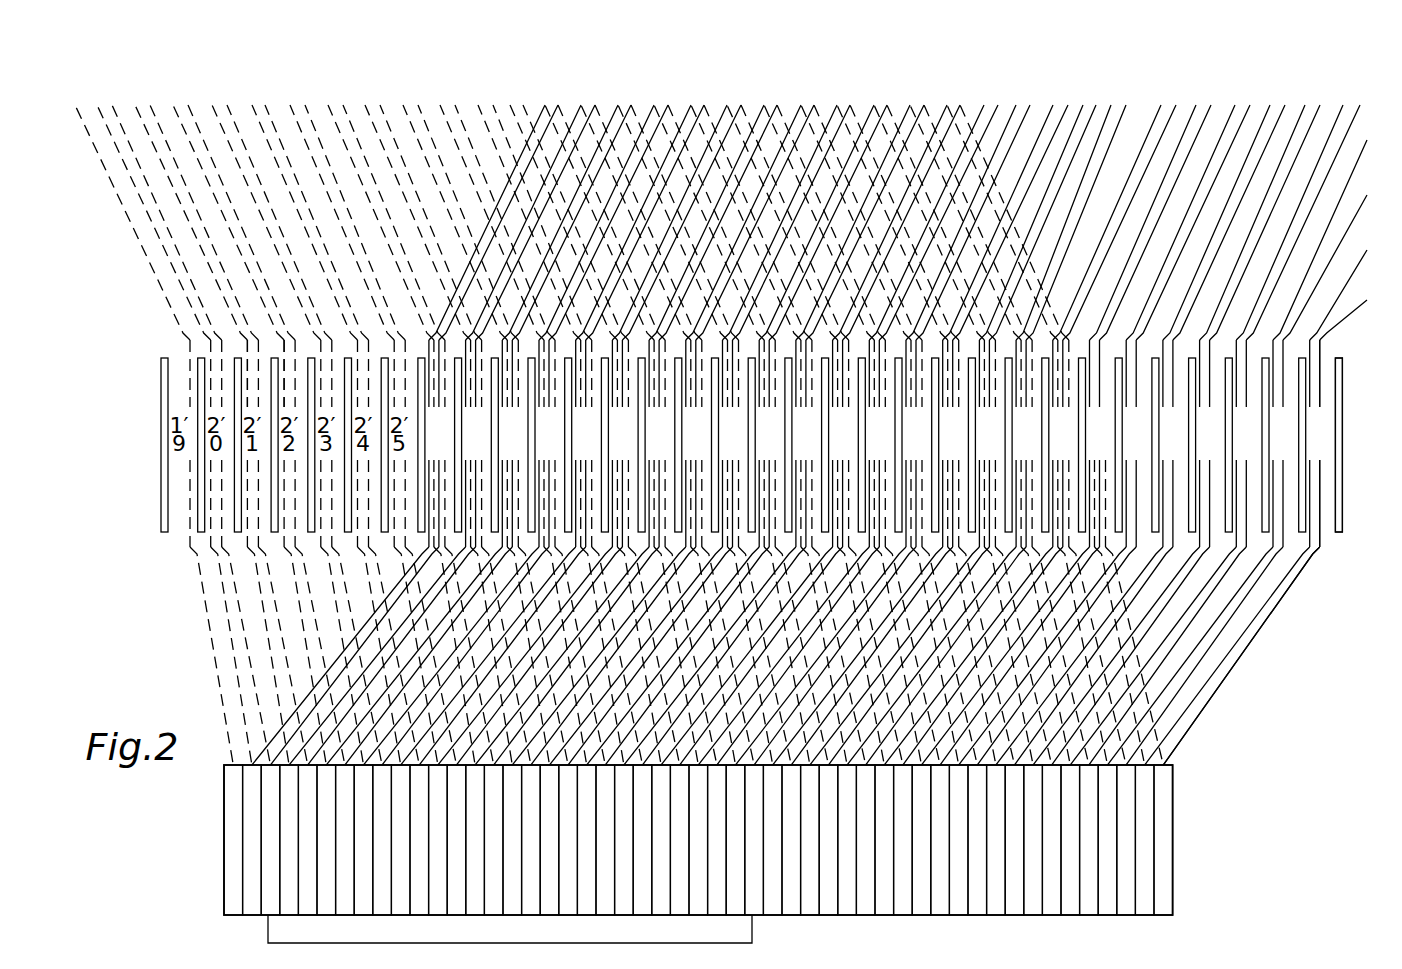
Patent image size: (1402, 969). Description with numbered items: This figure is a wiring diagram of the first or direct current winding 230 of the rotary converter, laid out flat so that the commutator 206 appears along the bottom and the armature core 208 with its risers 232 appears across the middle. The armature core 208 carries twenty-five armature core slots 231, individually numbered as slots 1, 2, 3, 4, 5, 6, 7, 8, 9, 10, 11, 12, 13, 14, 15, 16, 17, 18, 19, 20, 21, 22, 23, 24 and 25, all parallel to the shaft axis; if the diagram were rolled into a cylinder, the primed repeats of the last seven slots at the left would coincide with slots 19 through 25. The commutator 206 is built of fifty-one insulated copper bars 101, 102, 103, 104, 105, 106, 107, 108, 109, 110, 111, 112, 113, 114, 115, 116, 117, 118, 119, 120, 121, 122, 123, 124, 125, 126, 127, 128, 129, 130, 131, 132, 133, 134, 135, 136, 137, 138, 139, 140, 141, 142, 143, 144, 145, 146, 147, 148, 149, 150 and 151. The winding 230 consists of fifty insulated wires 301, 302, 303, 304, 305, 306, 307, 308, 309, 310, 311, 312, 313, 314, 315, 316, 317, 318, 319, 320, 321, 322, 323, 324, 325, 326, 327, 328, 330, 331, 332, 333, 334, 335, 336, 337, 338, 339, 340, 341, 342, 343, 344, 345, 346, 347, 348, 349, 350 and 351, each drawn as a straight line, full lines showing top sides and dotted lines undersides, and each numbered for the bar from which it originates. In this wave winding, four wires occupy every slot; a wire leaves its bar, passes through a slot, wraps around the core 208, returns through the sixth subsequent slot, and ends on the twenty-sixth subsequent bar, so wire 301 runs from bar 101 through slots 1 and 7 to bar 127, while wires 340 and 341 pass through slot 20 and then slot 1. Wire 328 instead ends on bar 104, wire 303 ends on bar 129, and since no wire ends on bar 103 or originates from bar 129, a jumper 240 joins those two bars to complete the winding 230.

The armature core slot 1 is at (432, 443).
The armature core slot 2 is at (469, 443).
The armature core slot 3 is at (505, 443).
The armature core slot 4 is at (542, 443).
The armature core slot 5 is at (579, 443).
The armature core slot 6 is at (615, 443).
The armature core slot 7 is at (652, 443).
The armature core slot 8 is at (689, 443).
The armature core slot 9 is at (726, 443).
The armature core slot 10 is at (761, 443).
The armature core slot 11 is at (798, 443).
The armature core slot 12 is at (835, 443).
The armature core slot 13 is at (871, 443).
The armature core slot 14 is at (908, 443).
The armature core slot 15 is at (945, 443).
The armature core slot 16 is at (981, 443).
The armature core slot 17 is at (1018, 443).
The armature core slot 18 is at (1055, 443).
The armature core slot 19 is at (1092, 443).
The armature core slot 20 is at (1127, 443).
The armature core slot 21 is at (1164, 443).
The armature core slot 22 is at (1201, 443).
The armature core slot 23 is at (1237, 443).
The armature core slot 24 is at (1274, 443).
The armature core slot 25 is at (1311, 443).
The commutator bar 101 is at (216, 731).
The commutator bar 102 is at (320, 731).
The commutator bar 103 is at (330, 731).
The commutator bar 104 is at (356, 731).
The commutator bar 105 is at (366, 731).
The commutator bar 106 is at (393, 731).
The commutator bar 107 is at (403, 731).
The commutator bar 108 is at (430, 731).
The commutator bar 109 is at (440, 731).
The commutator bar 110 is at (467, 731).
The commutator bar 111 is at (477, 731).
The commutator bar 112 is at (503, 731).
The commutator bar 113 is at (513, 731).
The commutator bar 114 is at (541, 731).
The commutator bar 115 is at (552, 731).
The commutator bar 116 is at (578, 731).
The commutator bar 117 is at (589, 731).
The commutator bar 118 is at (614, 731).
The commutator bar 119 is at (625, 731).
The commutator bar 120 is at (651, 731).
The commutator bar 121 is at (662, 731).
The commutator bar 122 is at (688, 731).
The commutator bar 123 is at (699, 731).
The commutator bar 124 is at (724, 731).
The commutator bar 125 is at (735, 731).
The commutator bar 126 is at (761, 731).
The commutator bar 127 is at (772, 731).
The commutator bar 128 is at (798, 731).
The commutator bar 129 is at (809, 731).
The commutator bar 130 is at (835, 731).
The commutator bar 131 is at (846, 731).
The commutator bar 132 is at (871, 731).
The commutator bar 133 is at (882, 731).
The commutator bar 134 is at (908, 731).
The commutator bar 135 is at (919, 731).
The commutator bar 136 is at (945, 731).
The commutator bar 137 is at (956, 731).
The commutator bar 138 is at (981, 731).
The commutator bar 139 is at (992, 731).
The commutator bar 140 is at (1018, 731).
The commutator bar 141 is at (1029, 731).
The commutator bar 142 is at (1055, 731).
The commutator bar 143 is at (1066, 731).
The commutator bar 144 is at (1091, 731).
The commutator bar 145 is at (1102, 731).
The commutator bar 146 is at (1128, 731).
The commutator bar 147 is at (1139, 731).
The commutator bar 148 is at (1165, 731).
The commutator bar 149 is at (1176, 731).
The commutator bar 150 is at (1202, 731).
The commutator bar 151 is at (1213, 731).
The wire 301 is at (541, 192).
The wire 302 is at (552, 192).
The wire 303 is at (578, 192).
The wire 304 is at (589, 192).
The wire 305 is at (614, 192).
The wire 306 is at (625, 192).
The wire 307 is at (651, 192).
The wire 308 is at (662, 192).
The wire 309 is at (688, 192).
The wire 310 is at (699, 192).
The wire 311 is at (724, 192).
The wire 312 is at (735, 192).
The wire 313 is at (761, 192).
The wire 314 is at (772, 192).
The wire 315 is at (798, 192).
The wire 316 is at (809, 192).
The wire 317 is at (835, 192).
The wire 318 is at (846, 192).
The wire 319 is at (871, 192).
The wire 320 is at (882, 192).
The wire 321 is at (908, 192).
The wire 322 is at (919, 192).
The wire 323 is at (945, 192).
The wire 324 is at (956, 192).
The wire 325 is at (927, 192).
The wire 326 is at (183, 602).
The wire 327 is at (187, 622).
The wire 328 is at (192, 645).
The wire 330 is at (592, 192).
The wire 331 is at (607, 192).
The wire 332 is at (626, 192).
The wire 333 is at (640, 192).
The wire 334 is at (660, 192).
The wire 335 is at (675, 192).
The wire 336 is at (705, 192).
The wire 337 is at (719, 192).
The wire 338 is at (741, 192).
The wire 339 is at (756, 192).
The wire 340 is at (780, 192).
The wire 341 is at (795, 192).
The wire 342 is at (816, 192).
The wire 343 is at (831, 192).
The wire 344 is at (852, 192).
The wire 345 is at (867, 192).
The wire 346 is at (890, 192).
The wire 347 is at (906, 192).
The wire 348 is at (927, 192).
The wire 349 is at (1268, 636).
The wire 350 is at (1256, 657).
The wire 351 is at (1246, 678).
The commutator 206 is at (1174, 815).
The armature core 208 is at (1350, 410).
The direct current winding 230 is at (1212, 704).
The armature core slots 231 is at (302, 355).
The risers 232 is at (1341, 359).
The jumper 240 is at (753, 932).